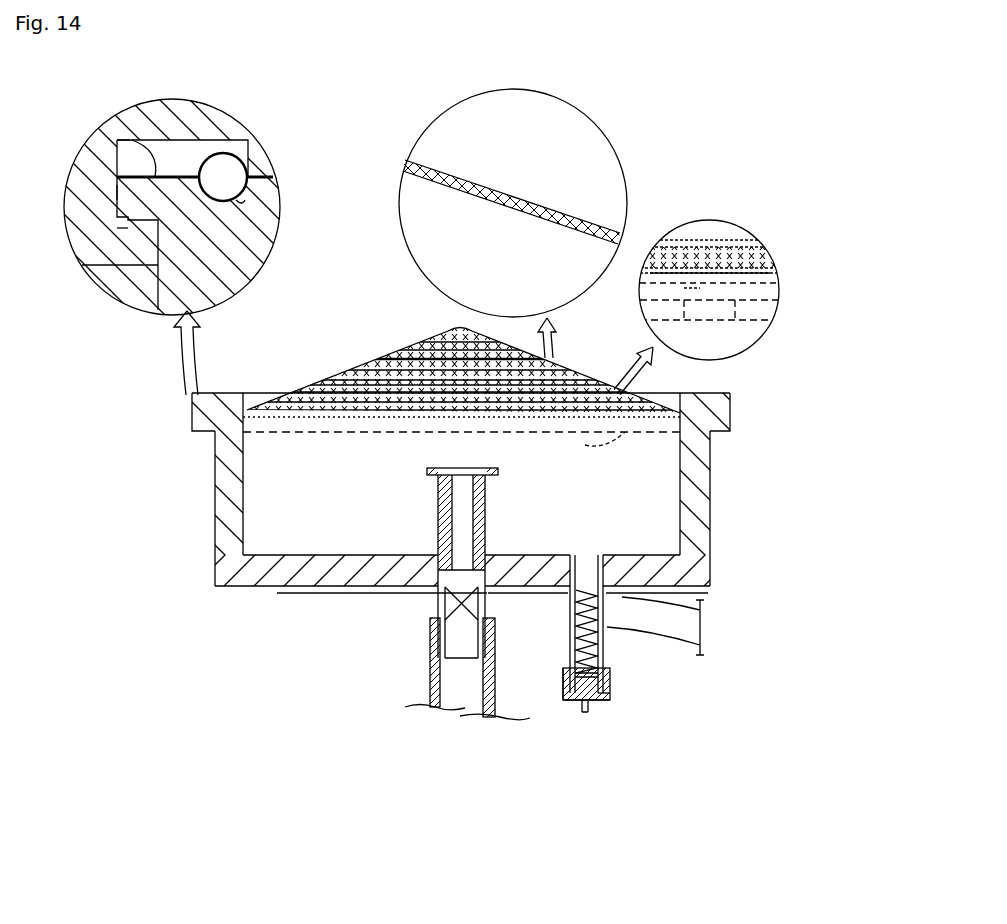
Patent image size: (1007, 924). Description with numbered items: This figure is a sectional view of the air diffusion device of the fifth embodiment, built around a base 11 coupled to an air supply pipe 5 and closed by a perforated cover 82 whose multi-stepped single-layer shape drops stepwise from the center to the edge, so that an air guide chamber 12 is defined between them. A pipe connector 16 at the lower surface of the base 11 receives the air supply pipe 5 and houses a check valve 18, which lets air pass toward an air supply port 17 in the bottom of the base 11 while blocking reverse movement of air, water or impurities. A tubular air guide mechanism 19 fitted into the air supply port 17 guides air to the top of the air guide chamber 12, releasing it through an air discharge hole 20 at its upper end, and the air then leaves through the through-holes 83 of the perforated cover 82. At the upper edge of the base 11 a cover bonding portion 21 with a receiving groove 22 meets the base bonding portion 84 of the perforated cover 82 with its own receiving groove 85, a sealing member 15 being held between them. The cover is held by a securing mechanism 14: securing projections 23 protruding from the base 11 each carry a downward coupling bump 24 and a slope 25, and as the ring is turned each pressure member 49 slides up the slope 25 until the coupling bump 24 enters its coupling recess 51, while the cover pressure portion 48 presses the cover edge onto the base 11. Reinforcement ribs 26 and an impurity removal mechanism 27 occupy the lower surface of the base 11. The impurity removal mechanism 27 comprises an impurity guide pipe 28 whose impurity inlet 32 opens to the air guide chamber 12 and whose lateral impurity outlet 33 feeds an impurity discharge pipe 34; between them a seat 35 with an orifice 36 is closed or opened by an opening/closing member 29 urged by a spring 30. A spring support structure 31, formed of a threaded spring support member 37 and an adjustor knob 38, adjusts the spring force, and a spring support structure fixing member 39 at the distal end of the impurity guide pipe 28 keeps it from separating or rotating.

The air supply pipe 5 is at (430, 685).
The base 11 is at (215, 512).
The air guide chamber 12 is at (285, 565).
The securing mechanism 14 is at (762, 394).
The sealing member 15 is at (247, 195).
The pipe connector 16 is at (437, 612).
The air supply port 17 is at (438, 553).
The check valve 18 is at (462, 612).
The air guide mechanism 19 is at (487, 502).
The air discharge hole 20 is at (478, 468).
The cover bonding portion 21 is at (117, 192).
The receiving groove 22 is at (240, 205).
The securing projection 23 is at (752, 268).
The coupling bump 24 is at (115, 233).
The slope 25 is at (782, 272).
The reinforcement rib 26 is at (363, 593).
The impurity removal mechanism 27 is at (626, 691).
The impurity guide pipe 28 is at (570, 632).
The opening/closing member 29 is at (568, 593).
The spring 30 is at (607, 673).
The spring support structure 31 is at (567, 711).
The impurity inlet 32 is at (573, 552).
The impurity outlet 33 is at (603, 632).
The impurity discharge pipe 34 is at (700, 627).
The seat 35 is at (600, 560).
The orifice 36 is at (580, 560).
The spring support member 37 is at (563, 683).
The adjustor knob 38 is at (587, 712).
The spring support structure fixing member 39 is at (610, 698).
The cover pressure portion 48 is at (275, 177).
The pressure member 49 is at (690, 292).
The coupling recess 51 is at (118, 265).
The perforated cover 82 is at (390, 335).
The through-hole 83 is at (533, 197).
The base bonding portion 84 is at (138, 140).
The receiving groove 85 is at (250, 162).